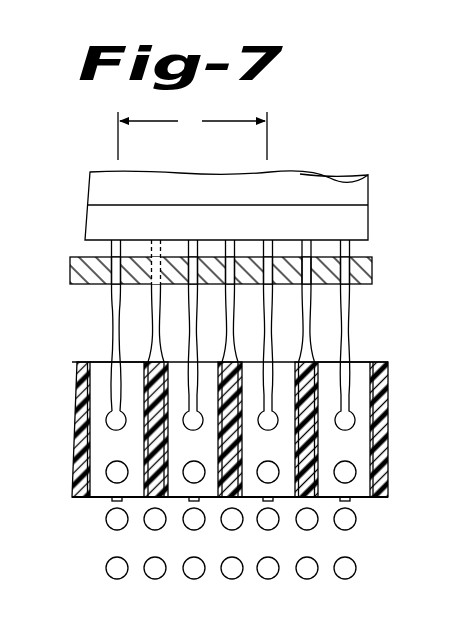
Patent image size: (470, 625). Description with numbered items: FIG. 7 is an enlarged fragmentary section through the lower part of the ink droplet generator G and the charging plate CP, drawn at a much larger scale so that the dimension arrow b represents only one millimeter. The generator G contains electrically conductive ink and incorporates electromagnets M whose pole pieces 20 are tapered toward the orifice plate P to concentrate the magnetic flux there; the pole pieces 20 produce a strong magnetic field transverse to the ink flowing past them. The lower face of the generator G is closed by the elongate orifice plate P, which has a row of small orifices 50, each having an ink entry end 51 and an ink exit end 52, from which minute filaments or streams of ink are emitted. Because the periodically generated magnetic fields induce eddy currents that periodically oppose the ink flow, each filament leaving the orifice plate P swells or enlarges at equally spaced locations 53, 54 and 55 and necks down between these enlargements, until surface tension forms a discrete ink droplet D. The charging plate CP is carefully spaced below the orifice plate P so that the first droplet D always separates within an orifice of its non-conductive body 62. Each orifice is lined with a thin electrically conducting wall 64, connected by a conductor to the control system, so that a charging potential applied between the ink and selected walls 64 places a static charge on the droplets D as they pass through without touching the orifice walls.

The pole piece 20 is at (230, 229).
The orifice 50 is at (194, 257).
The ink entry end 51 is at (116, 257).
The ink exit end 52 is at (112, 290).
The filament enlargement 53 is at (113, 326).
The filament enlargement 54 is at (117, 379).
The filament enlargement 55 is at (113, 424).
The non-conductive body 62 is at (386, 366).
The electrically conducting wall 64 is at (76, 483).
The ink droplet D is at (123, 464).
The orifice plate P is at (375, 267).
The electromagnet M is at (338, 171).
The ink droplet generator G is at (84, 156).
The dimension arrow b is at (192, 136).
The charging plate CP is at (392, 415).